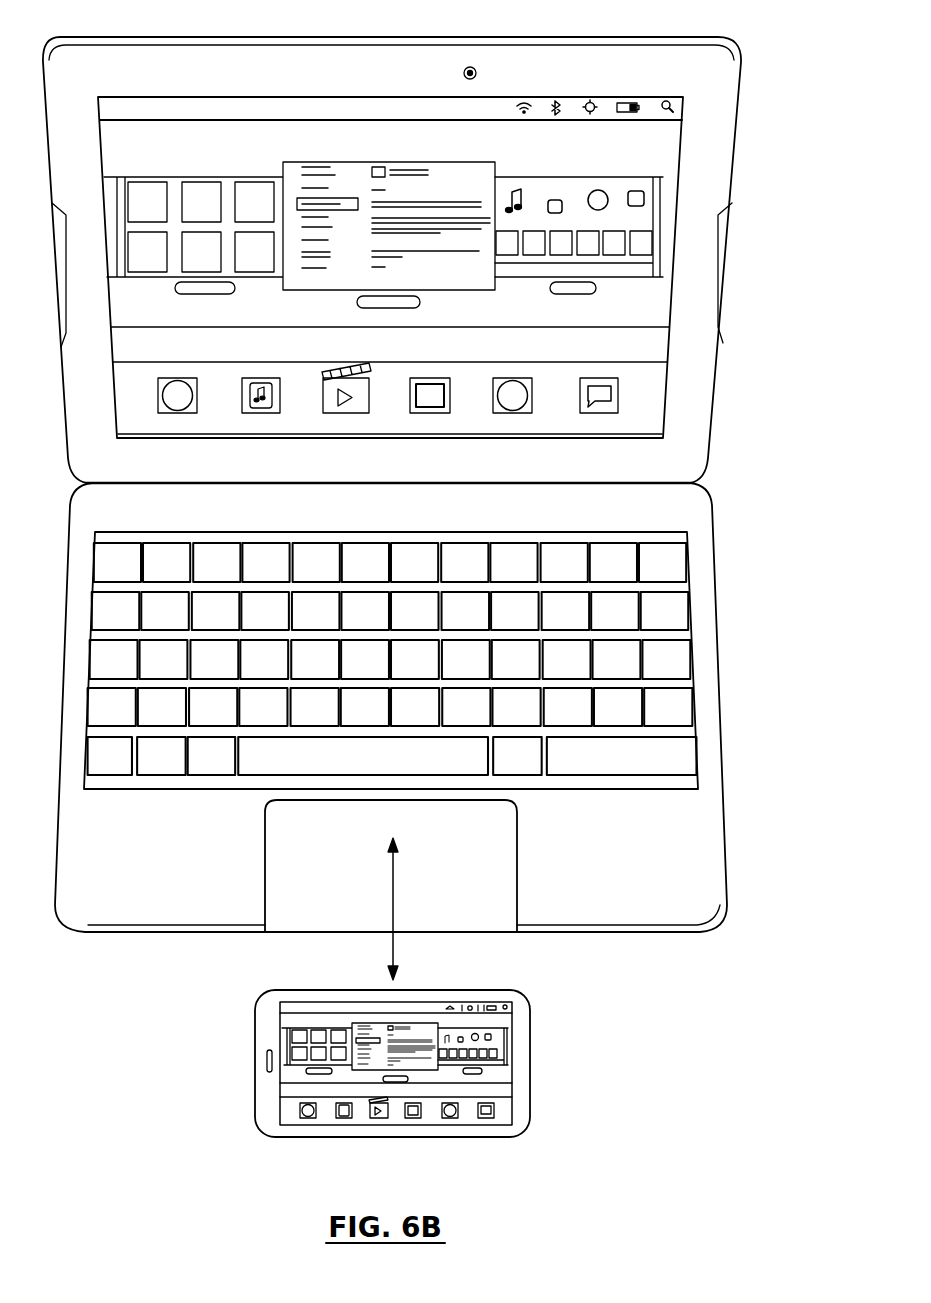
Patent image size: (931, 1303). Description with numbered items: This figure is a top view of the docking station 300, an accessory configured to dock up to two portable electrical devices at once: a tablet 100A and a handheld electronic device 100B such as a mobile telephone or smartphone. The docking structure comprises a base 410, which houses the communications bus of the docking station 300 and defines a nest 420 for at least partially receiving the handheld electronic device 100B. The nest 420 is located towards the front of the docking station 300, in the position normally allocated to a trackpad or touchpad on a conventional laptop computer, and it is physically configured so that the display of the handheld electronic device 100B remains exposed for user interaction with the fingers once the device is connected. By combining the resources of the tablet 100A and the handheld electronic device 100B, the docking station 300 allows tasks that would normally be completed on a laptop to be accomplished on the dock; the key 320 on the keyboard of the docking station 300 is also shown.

The tablet 100A is at (687, 360).
The handheld electronic device 100B is at (520, 1058).
The docking station 300 is at (460, 635).
The key 320 is at (662, 658).
The base 410 is at (675, 865).
The nest 420 is at (250, 867).